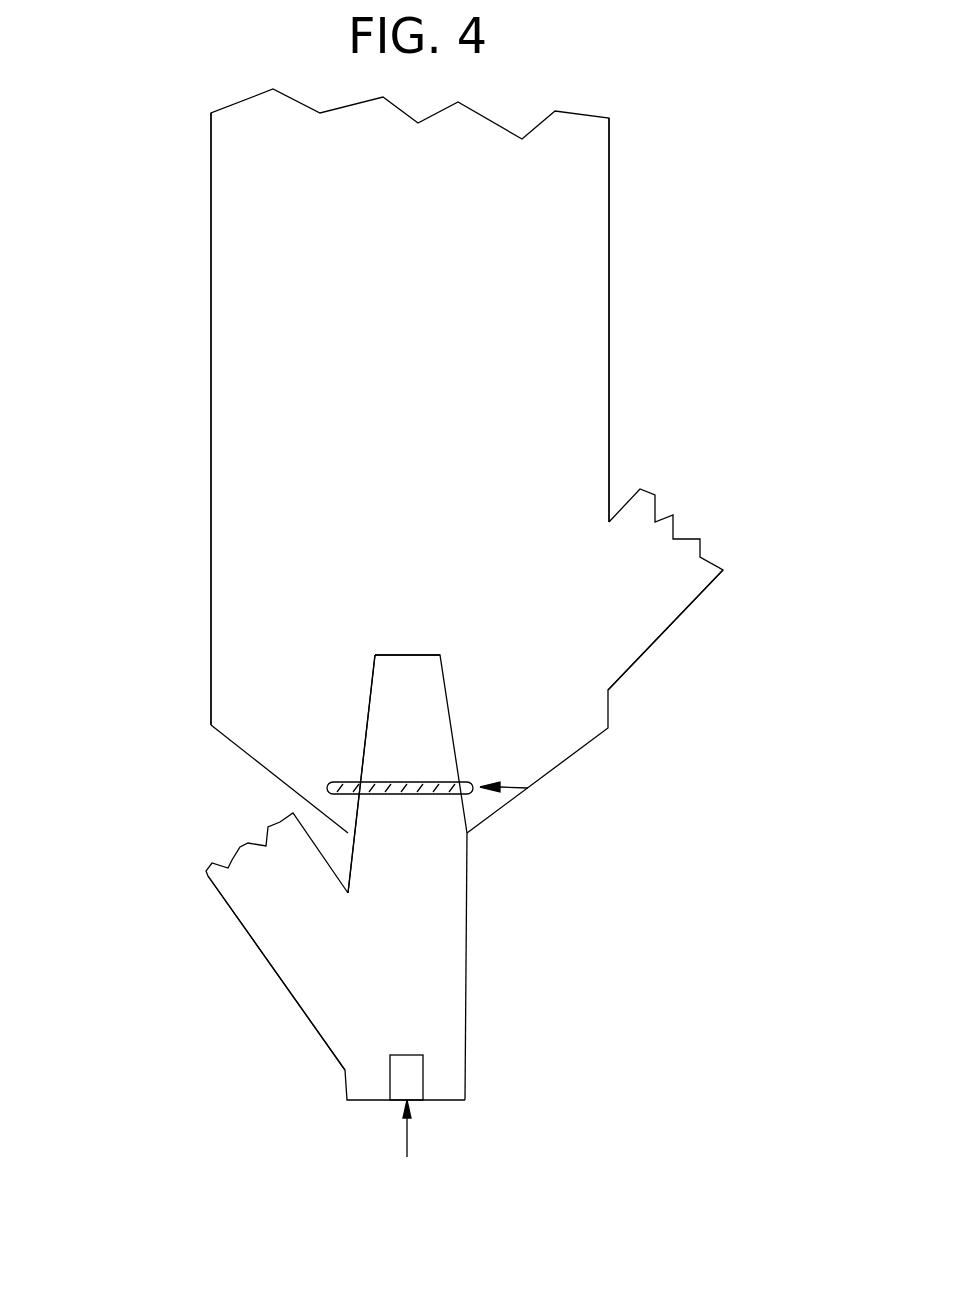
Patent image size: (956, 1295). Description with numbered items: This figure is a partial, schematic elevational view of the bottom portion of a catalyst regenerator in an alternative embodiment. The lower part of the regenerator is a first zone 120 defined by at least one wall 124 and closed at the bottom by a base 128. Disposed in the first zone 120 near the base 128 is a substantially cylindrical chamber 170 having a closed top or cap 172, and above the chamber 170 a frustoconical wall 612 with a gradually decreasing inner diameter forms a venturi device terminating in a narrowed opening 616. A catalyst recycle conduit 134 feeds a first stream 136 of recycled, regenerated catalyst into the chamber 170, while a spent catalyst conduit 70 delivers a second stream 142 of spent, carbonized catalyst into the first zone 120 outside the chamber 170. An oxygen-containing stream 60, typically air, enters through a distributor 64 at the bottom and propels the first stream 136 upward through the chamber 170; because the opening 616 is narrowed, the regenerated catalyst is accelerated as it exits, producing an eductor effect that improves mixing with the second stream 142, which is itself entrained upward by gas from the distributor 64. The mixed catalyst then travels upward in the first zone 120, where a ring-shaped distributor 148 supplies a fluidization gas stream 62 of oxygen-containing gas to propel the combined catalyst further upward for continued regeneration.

The first zone 120 is at (437, 285).
The wall 124 is at (609, 210).
The base 128 is at (211, 587).
The second stream of catalyst 142 is at (595, 615).
The spent catalyst conduit 70 is at (685, 615).
The cap 172 is at (425, 736).
The opening 616 is at (410, 652).
The frustoconical wall 612 is at (365, 707).
The chamber 170 is at (467, 970).
The catalyst recycle conduit 134 is at (248, 938).
The first stream of catalyst 136 is at (347, 970).
The distributor 148 is at (422, 797).
The fluidization gas stream 62 is at (528, 788).
The distributor 64 is at (410, 1080).
The oxygen-containing stream 60 is at (407, 1140).